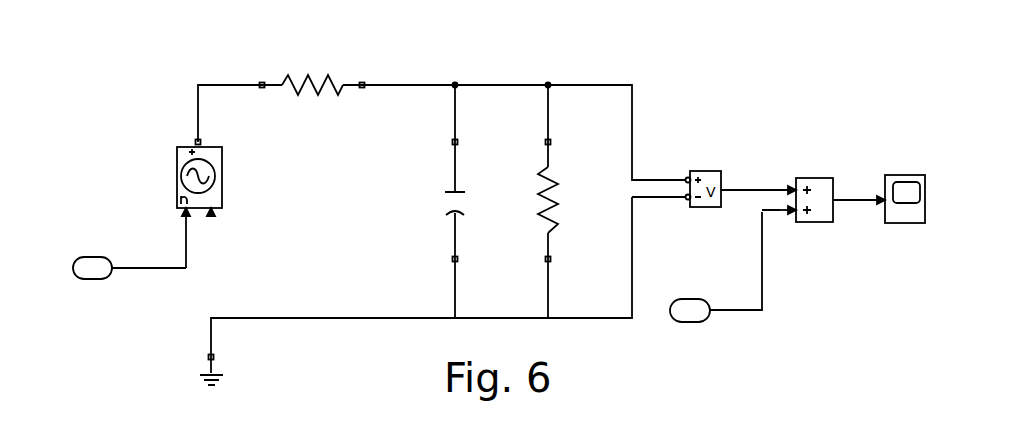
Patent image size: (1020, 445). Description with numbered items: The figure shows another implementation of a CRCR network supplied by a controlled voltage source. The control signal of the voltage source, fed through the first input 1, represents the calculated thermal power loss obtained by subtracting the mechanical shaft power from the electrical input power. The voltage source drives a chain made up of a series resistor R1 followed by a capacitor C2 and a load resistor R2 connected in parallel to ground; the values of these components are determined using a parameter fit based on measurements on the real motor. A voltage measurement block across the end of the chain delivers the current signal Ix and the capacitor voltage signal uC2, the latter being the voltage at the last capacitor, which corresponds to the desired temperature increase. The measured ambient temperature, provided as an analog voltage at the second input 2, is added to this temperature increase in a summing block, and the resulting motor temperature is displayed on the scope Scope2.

The resistor R1 is at (312, 103).
The capacitor C2 is at (440, 203).
The resistor R2 is at (532, 200).
The first input 1 is at (129, 279).
The second input 2 is at (716, 280).
The current signal Ix is at (740, 179).
The capacitor voltage signal uC2 is at (753, 207).
The scope Scope2 is at (886, 214).